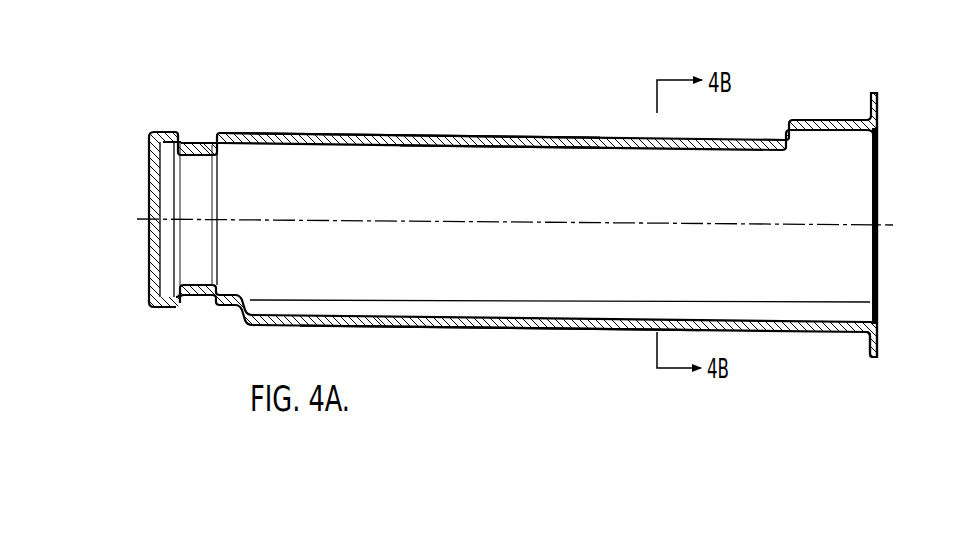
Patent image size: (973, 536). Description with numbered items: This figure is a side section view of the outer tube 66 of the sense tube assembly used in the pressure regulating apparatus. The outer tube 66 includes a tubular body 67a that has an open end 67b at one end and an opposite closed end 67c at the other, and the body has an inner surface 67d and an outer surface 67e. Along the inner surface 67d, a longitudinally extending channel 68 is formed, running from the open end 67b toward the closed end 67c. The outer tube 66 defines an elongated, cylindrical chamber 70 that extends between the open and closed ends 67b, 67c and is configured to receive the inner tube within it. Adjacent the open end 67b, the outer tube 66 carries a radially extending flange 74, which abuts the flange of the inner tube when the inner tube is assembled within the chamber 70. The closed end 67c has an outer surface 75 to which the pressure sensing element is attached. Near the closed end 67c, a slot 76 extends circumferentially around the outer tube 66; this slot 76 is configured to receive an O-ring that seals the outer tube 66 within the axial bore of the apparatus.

The outer tube 66 is at (540, 98).
The tubular body 67a is at (418, 133).
The open end 67b is at (817, 120).
The closed end 67c is at (167, 131).
The inner surface 67d is at (484, 147).
The outer surface 67e is at (338, 132).
The longitudinally extending channel 68 is at (484, 331).
The cylindrical chamber 70 is at (819, 185).
The radially extending flange 74 is at (878, 333).
The outer surface 75 is at (144, 196).
The slot 76 is at (203, 145).